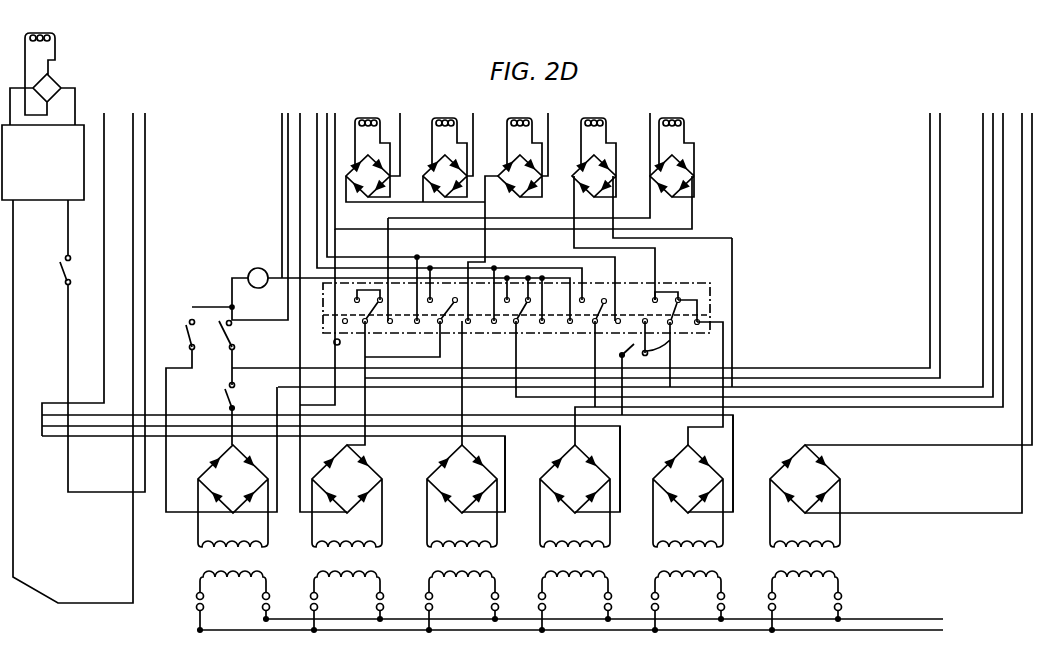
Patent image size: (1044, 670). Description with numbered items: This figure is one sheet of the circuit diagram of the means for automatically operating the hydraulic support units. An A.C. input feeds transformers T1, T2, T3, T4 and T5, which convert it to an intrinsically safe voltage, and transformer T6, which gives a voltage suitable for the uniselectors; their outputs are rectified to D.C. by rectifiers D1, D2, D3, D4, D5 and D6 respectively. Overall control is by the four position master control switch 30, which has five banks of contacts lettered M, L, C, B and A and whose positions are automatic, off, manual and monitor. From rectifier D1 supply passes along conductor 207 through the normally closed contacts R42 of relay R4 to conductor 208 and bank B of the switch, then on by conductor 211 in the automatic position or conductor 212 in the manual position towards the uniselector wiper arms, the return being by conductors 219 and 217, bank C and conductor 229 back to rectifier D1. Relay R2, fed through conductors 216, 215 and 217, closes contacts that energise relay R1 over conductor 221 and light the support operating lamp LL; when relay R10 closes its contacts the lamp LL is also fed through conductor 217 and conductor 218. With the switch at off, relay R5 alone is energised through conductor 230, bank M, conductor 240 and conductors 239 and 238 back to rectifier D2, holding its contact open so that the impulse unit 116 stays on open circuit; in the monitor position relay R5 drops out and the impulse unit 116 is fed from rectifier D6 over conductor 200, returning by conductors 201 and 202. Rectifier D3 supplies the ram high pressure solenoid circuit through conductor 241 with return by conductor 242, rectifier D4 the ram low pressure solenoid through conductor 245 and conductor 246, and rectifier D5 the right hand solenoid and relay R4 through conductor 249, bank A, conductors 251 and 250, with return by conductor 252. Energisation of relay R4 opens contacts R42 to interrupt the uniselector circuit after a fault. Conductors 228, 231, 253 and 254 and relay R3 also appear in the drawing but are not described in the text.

The impulse unit 116 is at (50, 174).
The relay R10 is at (54, 76).
The conductor 200 is at (40, 349).
The conductor 201 is at (66, 330).
The conductor 202 is at (930, 513).
The relay R5 is at (62, 274).
The conductor 207 is at (231, 408).
The conductor 208 is at (288, 367).
The conductor 211 is at (513, 182).
The conductor 212 is at (562, 256).
The conductor 215 is at (487, 206).
The conductor 216 is at (423, 198).
The conductor 217 is at (432, 266).
The conductor 218 is at (223, 307).
The conductor 219 is at (282, 232).
The conductor 221 is at (401, 217).
The support operating lamp LL is at (262, 270).
The lead 228 is at (439, 379).
The conductor 229 is at (372, 402).
The conductor 230 is at (337, 400).
The lead 231 is at (580, 362).
The conductor 238 is at (325, 344).
The conductor 239 is at (388, 224).
The conductor 240 is at (389, 243).
The conductor 241 is at (545, 408).
The conductor 242 is at (505, 447).
The conductor 245 is at (795, 415).
The conductor 246 is at (620, 446).
The conductor 249 is at (724, 333).
The conductor 250 is at (733, 282).
The conductor 251 is at (813, 387).
The conductor 252 is at (733, 450).
The lead 253 is at (622, 388).
The contact 254 is at (673, 354).
The master control switch 30 is at (710, 283).
The relay R2 is at (238, 353).
The contacts R4₂ R42 is at (245, 397).
The relay R4 is at (615, 346).
The relay R1 is at (368, 157).
The relay R3 is at (520, 157).
The rectifier D1 is at (233, 496).
The rectifier D2 is at (347, 496).
The rectifier D3 is at (462, 496).
The rectifier D4 is at (575, 496).
The rectifier D5 is at (688, 496).
The rectifier D6 is at (805, 496).
The transformer T1 is at (222, 601).
The transformer T2 is at (336, 601).
The transformer T3 is at (451, 601).
The transformer T4 is at (564, 601).
The transformer T5 is at (677, 601).
The transformer T6 is at (794, 601).